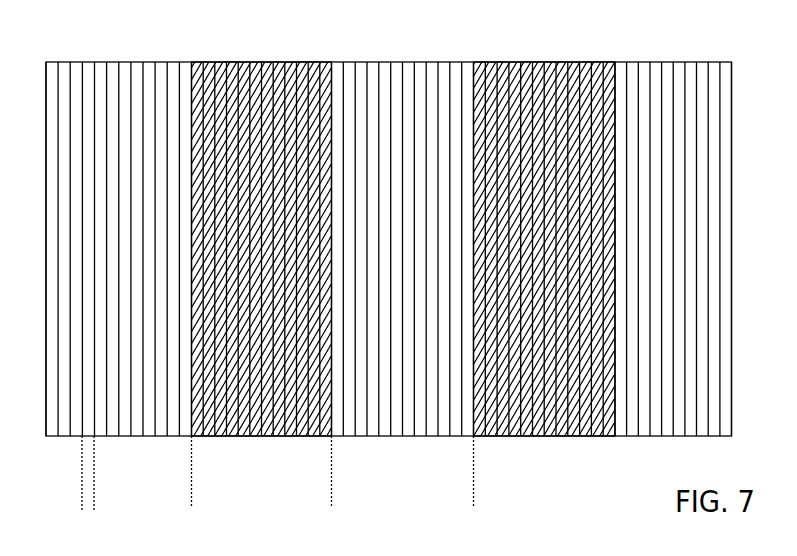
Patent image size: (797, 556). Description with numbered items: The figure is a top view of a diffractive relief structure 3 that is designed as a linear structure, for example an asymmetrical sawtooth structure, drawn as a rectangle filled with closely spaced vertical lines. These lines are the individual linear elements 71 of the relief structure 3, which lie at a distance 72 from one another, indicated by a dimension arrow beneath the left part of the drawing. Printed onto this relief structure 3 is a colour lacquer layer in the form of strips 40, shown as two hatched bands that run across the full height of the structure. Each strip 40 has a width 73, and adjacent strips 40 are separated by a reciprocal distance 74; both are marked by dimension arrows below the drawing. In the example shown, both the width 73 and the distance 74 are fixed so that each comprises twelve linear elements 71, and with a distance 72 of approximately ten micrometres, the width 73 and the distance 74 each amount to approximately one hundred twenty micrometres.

The diffractive relief structure 3 is at (691, 59).
The strips 40 is at (260, 66).
The linear elements 71 is at (107, 72).
The distance 72 is at (132, 498).
The width 73 is at (332, 498).
The reciprocal distance 74 is at (474, 498).